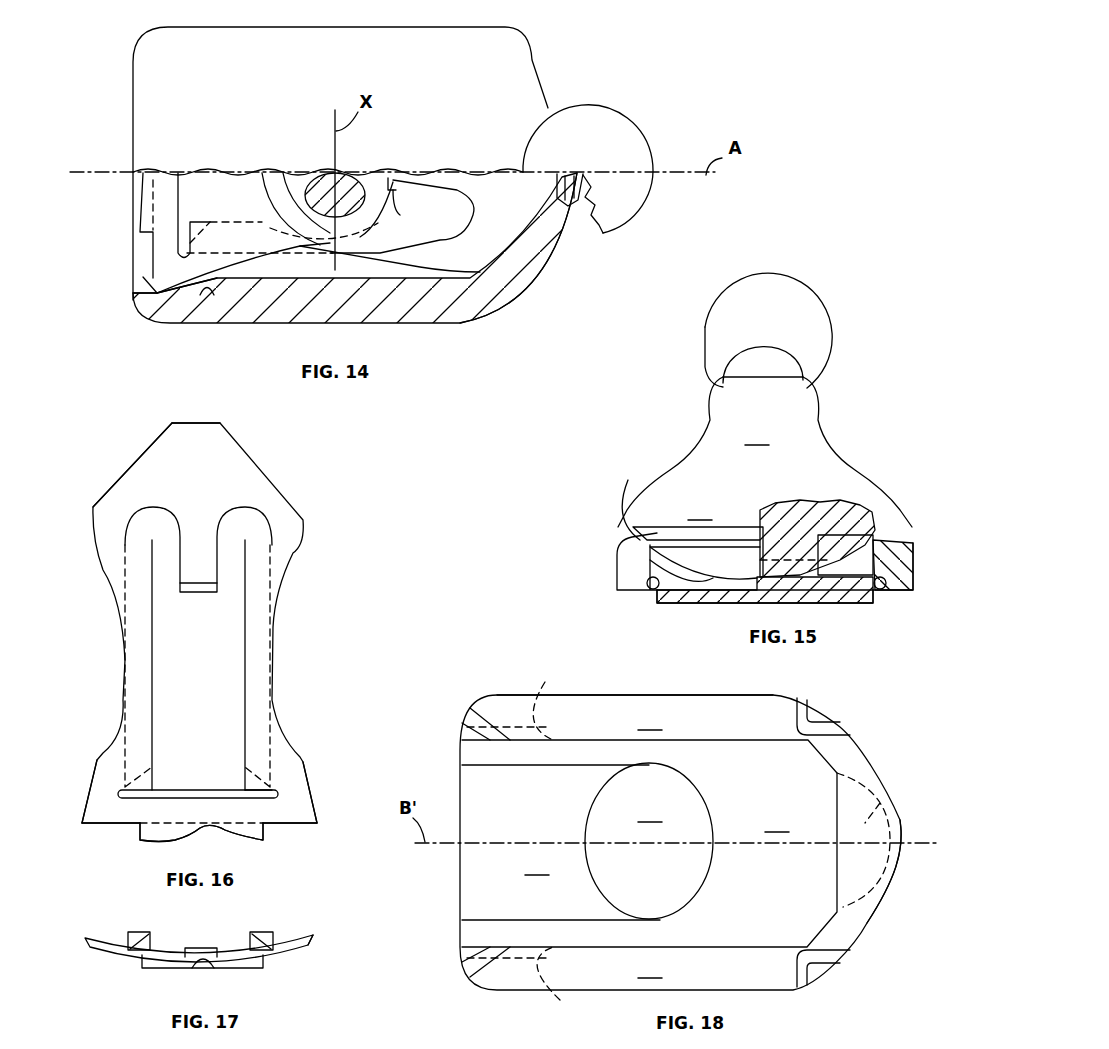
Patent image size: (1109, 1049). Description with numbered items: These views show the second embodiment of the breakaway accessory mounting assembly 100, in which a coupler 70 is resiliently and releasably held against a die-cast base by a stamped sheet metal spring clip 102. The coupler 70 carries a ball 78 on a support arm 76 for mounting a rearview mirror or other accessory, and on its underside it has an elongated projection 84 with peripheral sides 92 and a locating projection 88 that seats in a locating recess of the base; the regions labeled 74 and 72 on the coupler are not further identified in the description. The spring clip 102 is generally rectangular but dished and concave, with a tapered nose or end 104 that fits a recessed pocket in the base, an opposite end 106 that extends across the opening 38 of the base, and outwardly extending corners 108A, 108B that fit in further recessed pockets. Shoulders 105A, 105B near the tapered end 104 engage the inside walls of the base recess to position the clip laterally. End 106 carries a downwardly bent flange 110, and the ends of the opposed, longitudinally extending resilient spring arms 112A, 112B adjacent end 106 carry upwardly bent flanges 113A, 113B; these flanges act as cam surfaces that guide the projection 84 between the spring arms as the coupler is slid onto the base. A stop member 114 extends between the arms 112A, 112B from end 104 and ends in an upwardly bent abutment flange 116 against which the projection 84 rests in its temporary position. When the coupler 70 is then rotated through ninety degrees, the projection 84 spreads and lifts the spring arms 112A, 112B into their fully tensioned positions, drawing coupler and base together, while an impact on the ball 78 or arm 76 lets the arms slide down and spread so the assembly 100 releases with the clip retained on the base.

In FIG. 14, the breakaway accessory mounting assembly 100 is at (607, 86).
In FIG. 15, the breakaway accessory mounting assembly 100 is at (853, 291).
In FIG. 14, the ball 78 is at (633, 147).
In FIG. 15, the ball 78 is at (718, 322).
In FIG. 15, the support arm 76 is at (733, 370).
In FIG. 15, the coupler 70 is at (825, 432).
In FIG. 15, the stem body 74 is at (757, 435).
In FIG. 15, the base plate 72 is at (698, 538).
In FIG. 15, the locating projection 88 is at (624, 497).
In FIG. 14, the projection 84 is at (278, 193).
In FIG. 15, the projection 84 is at (790, 540).
In FIG. 14, the peripheral sides 92 is at (296, 186).
In FIG. 15, the spring clip 102 is at (832, 547).
In FIG. 16, the spring clip 102 is at (338, 470).
In FIG. 16, the tapered nose or end 104 is at (242, 455).
In FIG. 16, the shoulder 105A is at (103, 510).
In FIG. 14, the shoulder 105B is at (463, 273).
In FIG. 14, the opposite end 106 is at (163, 255).
In FIG. 16, the opposite end 106 is at (233, 813).
In FIG. 16, the outwardly extending corner 108A is at (99, 813).
In FIG. 17, the outwardly extending corner 108A is at (105, 952).
In FIG. 14, the outwardly extending corner 108B is at (157, 293).
In FIG. 15, the outwardly extending corner 108B is at (897, 540).
In FIG. 16, the outwardly extending corner 108B is at (297, 815).
In FIG. 17, the outwardly extending corner 108B is at (295, 948).
In FIG. 14, the bent flange 110 is at (140, 222).
In FIG. 16, the bent flange 110 is at (162, 833).
In FIG. 17, the bent flange 110 is at (161, 963).
In FIG. 16, the resilient spring arm 112A is at (138, 662).
In FIG. 17, the resilient spring arm 112A is at (150, 934).
In FIG. 15, the resilient spring arm 112B is at (833, 545).
In FIG. 16, the resilient spring arm 112B is at (260, 658).
In FIG. 17, the resilient spring arm 112B is at (250, 934).
In FIG. 16, the upwardly bent flange 113A is at (153, 788).
In FIG. 17, the upwardly bent flange 113A is at (130, 934).
In FIG. 14, the upwardly bent flange 113B is at (193, 223).
In FIG. 16, the upwardly bent flange 113B is at (245, 779).
In FIG. 17, the upwardly bent flange 113B is at (273, 934).
In FIG. 14, the stop member 114 is at (412, 176).
In FIG. 16, the stop member 114 is at (207, 562).
In FIG. 14, the abutment flange 116 is at (394, 192).
In FIG. 16, the abutment flange 116 is at (203, 592).
In FIG. 17, the abutment flange 116 is at (211, 955).
In FIG. 18, the opening 38 is at (468, 868).